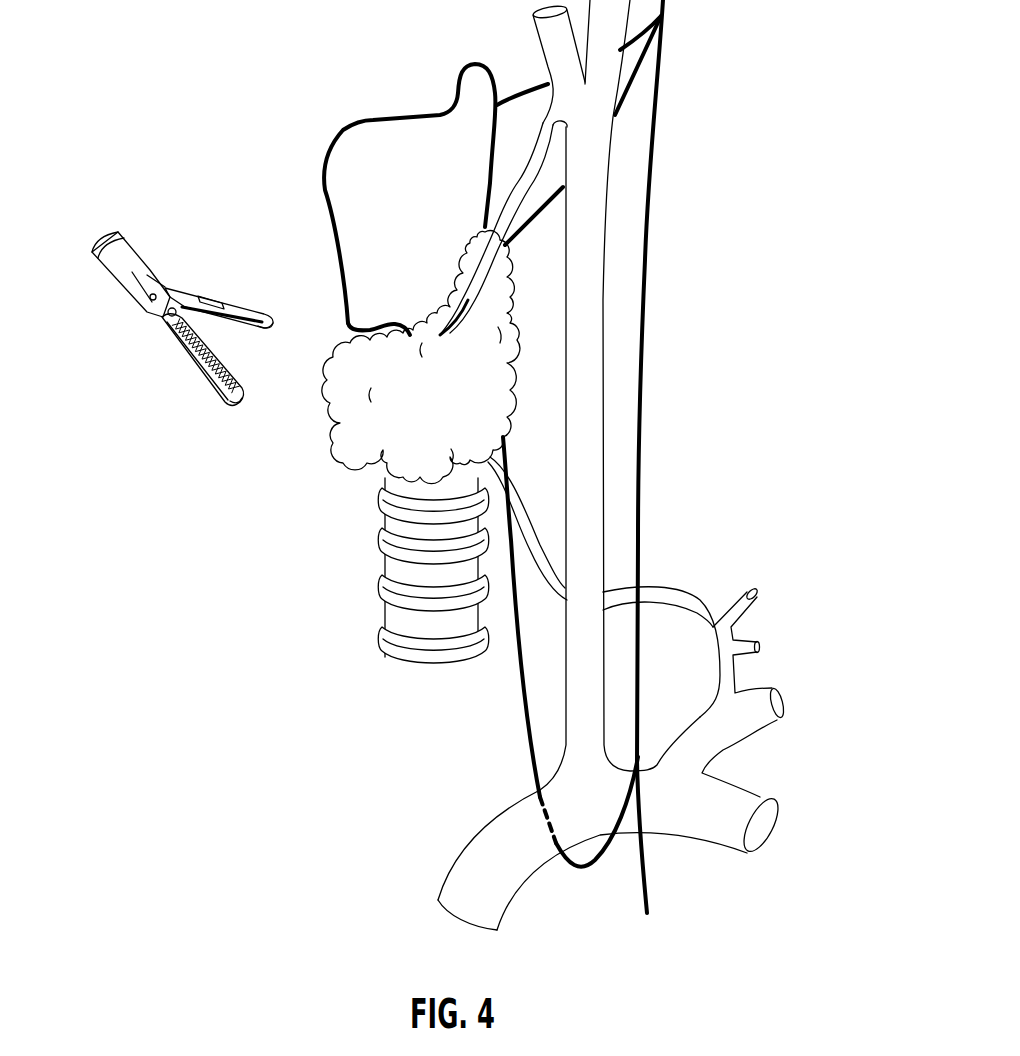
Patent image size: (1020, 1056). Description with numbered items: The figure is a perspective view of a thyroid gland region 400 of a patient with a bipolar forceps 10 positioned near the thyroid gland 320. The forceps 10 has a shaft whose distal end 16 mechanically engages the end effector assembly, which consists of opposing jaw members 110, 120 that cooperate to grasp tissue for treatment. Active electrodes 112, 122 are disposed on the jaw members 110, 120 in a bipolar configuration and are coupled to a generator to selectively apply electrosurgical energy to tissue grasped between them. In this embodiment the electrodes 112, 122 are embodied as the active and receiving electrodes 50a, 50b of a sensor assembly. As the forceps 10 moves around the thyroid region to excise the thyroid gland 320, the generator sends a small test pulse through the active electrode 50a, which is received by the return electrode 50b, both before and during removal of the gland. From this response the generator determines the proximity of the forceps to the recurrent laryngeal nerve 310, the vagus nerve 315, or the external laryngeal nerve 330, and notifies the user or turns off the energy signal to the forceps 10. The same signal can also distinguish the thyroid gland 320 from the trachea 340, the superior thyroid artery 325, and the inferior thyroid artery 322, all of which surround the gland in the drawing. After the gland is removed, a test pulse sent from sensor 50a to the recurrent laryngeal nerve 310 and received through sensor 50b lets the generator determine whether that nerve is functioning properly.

The bipolar forceps 10 is at (181, 321).
The distal end 16 is at (128, 258).
The jaw member 110 is at (241, 313).
The jaw member 120 is at (239, 378).
The active electrode 112 is at (237, 330).
The active electrode 122 is at (227, 365).
The active electrode of sensor assembly 50a is at (262, 330).
The receiving electrode of sensor assembly 50b is at (243, 393).
The recurrent laryngeal nerve 310 is at (503, 447).
The vagus nerve 315 is at (645, 324).
The thyroid gland 320 is at (343, 447).
The inferior thyroid artery 322 is at (677, 590).
The superior thyroid artery 325 is at (520, 178).
The external laryngeal nerve 330 is at (556, 210).
The trachea 340 is at (400, 612).
The thyroid gland region 400 is at (772, 98).